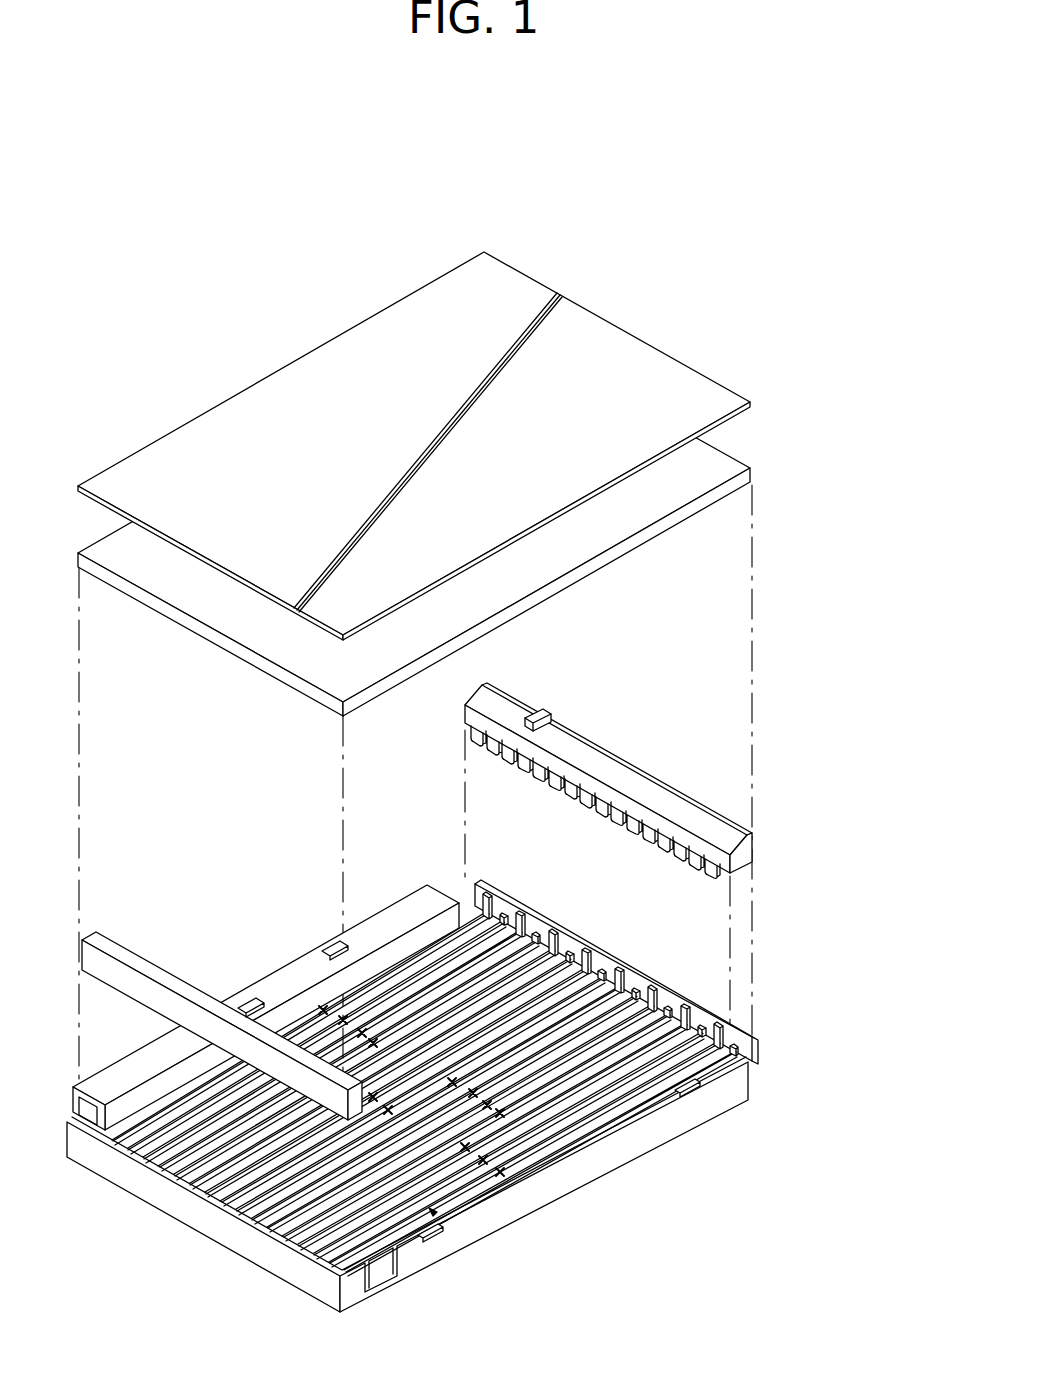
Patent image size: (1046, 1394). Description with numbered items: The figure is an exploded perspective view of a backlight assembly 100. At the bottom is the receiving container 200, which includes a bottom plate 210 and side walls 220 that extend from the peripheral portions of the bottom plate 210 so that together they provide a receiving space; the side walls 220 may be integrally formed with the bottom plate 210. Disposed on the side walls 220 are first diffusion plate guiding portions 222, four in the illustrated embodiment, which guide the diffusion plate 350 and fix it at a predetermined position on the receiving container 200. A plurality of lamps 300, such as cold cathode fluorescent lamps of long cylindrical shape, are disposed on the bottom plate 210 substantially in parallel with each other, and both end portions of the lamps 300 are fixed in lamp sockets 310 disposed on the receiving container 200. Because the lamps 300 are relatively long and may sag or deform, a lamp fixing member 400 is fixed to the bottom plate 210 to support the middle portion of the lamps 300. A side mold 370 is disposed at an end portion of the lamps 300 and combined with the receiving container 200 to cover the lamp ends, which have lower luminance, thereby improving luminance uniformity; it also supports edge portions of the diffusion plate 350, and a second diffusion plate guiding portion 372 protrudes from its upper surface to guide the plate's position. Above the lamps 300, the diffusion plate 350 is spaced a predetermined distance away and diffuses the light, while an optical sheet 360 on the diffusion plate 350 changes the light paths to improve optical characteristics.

The backlight assembly 100 is at (471, 728).
The receiving container 200 is at (471, 1079).
The bottom plate 210 is at (632, 1102).
The side walls 220 is at (723, 1100).
The first diffusion plate guiding portion 222 is at (332, 946).
The lamps 300 is at (438, 1212).
The lamp sockets 310 is at (510, 902).
The diffusion plate 350 is at (754, 452).
The optical sheet 360 is at (750, 378).
The side mold 370 is at (608, 768).
The second diffusion plate guiding portion 372 is at (543, 716).
The lamp fixing member 400 is at (520, 1112).